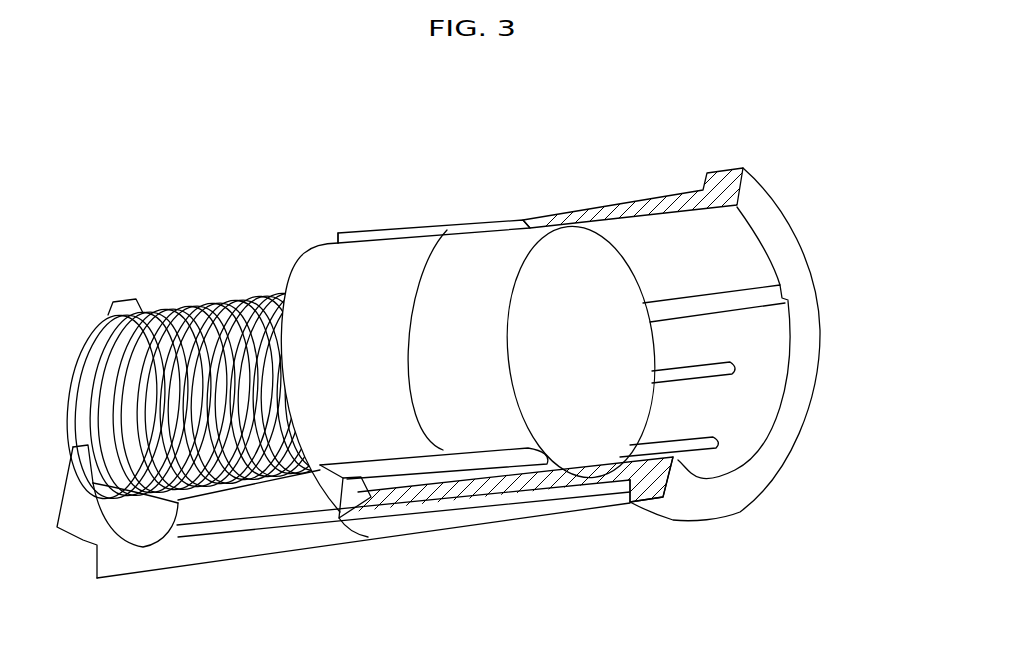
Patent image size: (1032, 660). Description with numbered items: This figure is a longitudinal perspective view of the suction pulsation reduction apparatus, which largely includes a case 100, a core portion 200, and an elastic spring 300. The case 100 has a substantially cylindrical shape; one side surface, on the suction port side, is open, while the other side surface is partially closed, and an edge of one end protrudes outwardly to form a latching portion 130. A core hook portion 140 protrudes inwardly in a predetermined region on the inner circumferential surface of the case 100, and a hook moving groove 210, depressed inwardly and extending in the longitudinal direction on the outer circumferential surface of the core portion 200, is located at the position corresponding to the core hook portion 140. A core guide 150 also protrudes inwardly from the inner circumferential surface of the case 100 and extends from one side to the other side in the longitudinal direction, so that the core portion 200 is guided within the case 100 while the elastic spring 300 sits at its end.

The case 100 is at (573, 505).
The latching portion 130 is at (663, 507).
The core hook portion 140 is at (322, 512).
The core guide 150 is at (772, 280).
The core portion 200 is at (465, 248).
The hook moving groove 210 is at (408, 470).
The elastic spring 300 is at (197, 310).